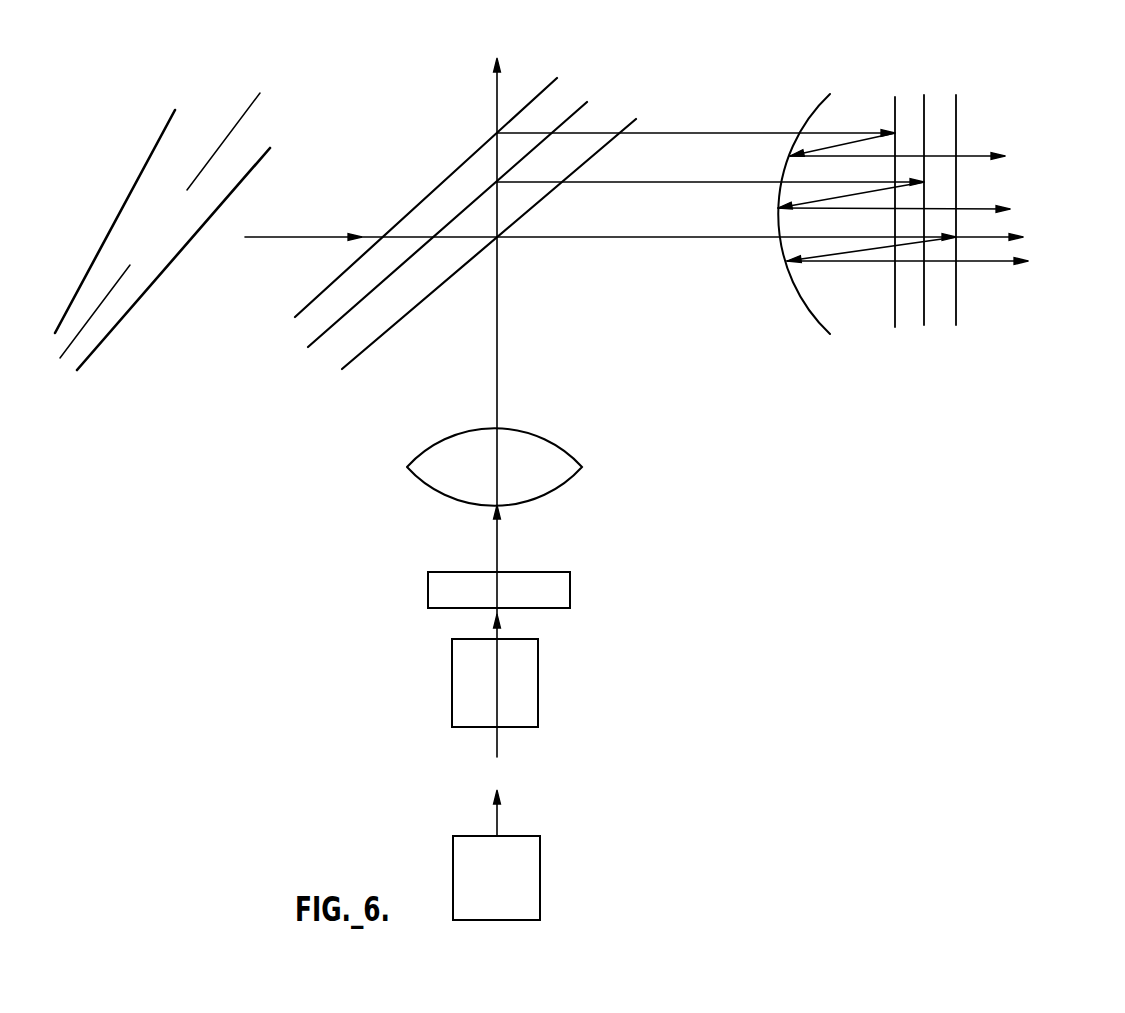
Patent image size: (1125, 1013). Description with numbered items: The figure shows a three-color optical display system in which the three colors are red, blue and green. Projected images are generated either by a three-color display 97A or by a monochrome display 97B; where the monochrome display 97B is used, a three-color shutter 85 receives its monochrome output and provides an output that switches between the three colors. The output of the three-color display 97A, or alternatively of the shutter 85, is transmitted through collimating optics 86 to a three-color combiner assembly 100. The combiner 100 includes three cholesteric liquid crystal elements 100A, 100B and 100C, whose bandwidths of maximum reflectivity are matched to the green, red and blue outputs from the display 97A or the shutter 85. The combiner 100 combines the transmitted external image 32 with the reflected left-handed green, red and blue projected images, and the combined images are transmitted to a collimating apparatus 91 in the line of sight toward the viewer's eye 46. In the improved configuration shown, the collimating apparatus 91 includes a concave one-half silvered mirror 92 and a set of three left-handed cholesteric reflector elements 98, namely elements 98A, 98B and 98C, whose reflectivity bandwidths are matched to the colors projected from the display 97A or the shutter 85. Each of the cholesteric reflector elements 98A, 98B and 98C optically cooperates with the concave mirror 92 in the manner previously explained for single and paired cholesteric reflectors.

The three-color combiner assembly 100 is at (647, 50).
The cholesteric liquid crystal element 100A is at (353, 361).
The cholesteric liquid crystal element 100B is at (317, 348).
The cholesteric liquid crystal element 100C is at (296, 322).
The external image 32 is at (162, 231).
The concave one-half silvered mirror 92 is at (812, 113).
The cholesteric reflector elements 98 is at (937, 372).
The cholesteric reflector element 98A is at (956, 320).
The cholesteric reflector element 98B is at (924, 320).
The cholesteric reflector element 98C is at (895, 320).
The collimating apparatus 91 is at (902, 432).
The output beams 46 is at (1075, 243).
The collimating optics 86 is at (572, 458).
The three-color shutter 85 is at (537, 572).
The three-color display 97A is at (525, 836).
The monochrome display 97B is at (538, 643).